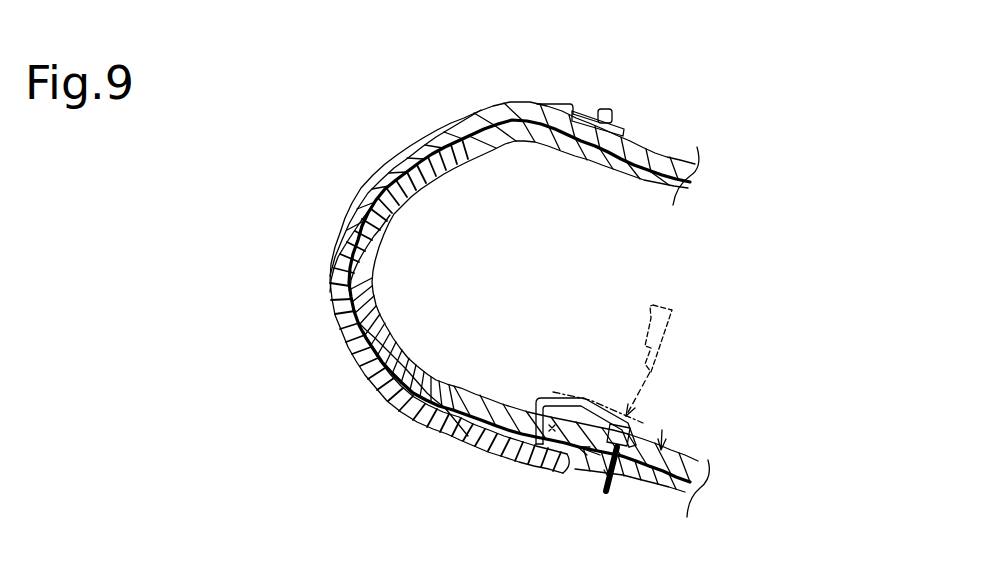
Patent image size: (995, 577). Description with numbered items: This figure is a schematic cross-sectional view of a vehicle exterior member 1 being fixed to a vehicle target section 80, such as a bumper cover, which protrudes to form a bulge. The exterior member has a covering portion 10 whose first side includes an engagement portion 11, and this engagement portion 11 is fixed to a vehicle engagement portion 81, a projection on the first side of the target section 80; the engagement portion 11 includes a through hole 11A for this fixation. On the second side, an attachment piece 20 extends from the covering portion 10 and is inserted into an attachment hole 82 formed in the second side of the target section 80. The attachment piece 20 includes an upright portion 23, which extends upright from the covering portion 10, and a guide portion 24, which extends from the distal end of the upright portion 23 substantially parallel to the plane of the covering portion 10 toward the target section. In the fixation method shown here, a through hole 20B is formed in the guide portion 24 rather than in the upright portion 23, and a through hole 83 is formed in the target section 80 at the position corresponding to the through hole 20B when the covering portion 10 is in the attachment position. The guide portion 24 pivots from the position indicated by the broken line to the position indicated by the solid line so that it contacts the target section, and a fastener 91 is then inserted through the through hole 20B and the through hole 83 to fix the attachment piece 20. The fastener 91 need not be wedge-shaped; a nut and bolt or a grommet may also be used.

The vehicle exterior member 1 is at (387, 111).
The covering portion 10 is at (318, 308).
The engagement portion 11 is at (644, 126).
The through hole 11A is at (593, 99).
The attachment piece 20 is at (610, 386).
The through hole 20B is at (604, 477).
The upright portion 23 is at (480, 430).
The guide portion 24 is at (652, 437).
The vehicle target section 80 is at (413, 238).
The vehicle engagement portion 81 is at (622, 100).
The attachment hole 82 is at (546, 452).
The through hole 83 is at (658, 460).
The fastener 91 is at (673, 300).